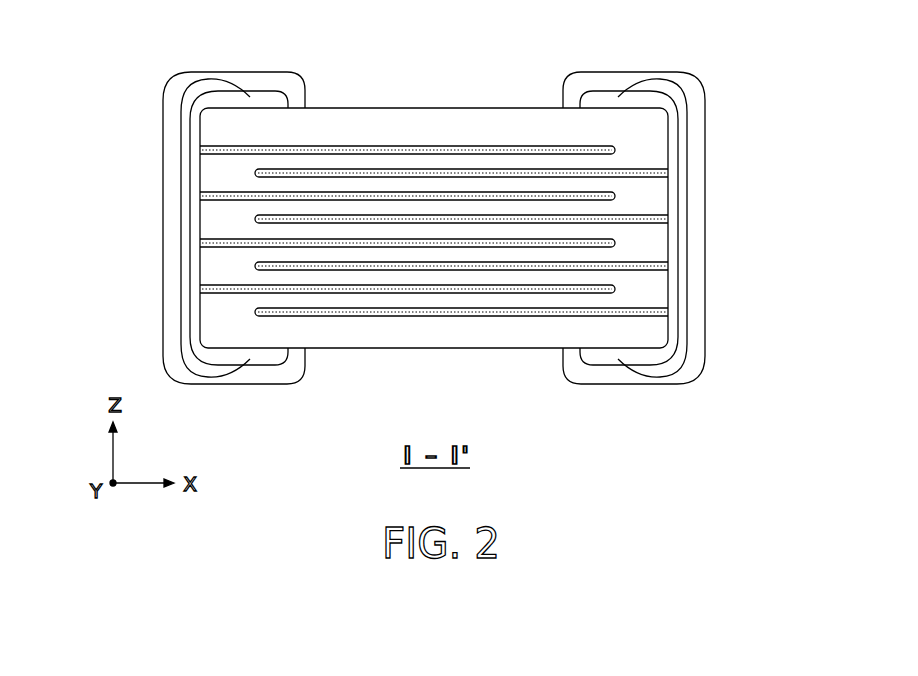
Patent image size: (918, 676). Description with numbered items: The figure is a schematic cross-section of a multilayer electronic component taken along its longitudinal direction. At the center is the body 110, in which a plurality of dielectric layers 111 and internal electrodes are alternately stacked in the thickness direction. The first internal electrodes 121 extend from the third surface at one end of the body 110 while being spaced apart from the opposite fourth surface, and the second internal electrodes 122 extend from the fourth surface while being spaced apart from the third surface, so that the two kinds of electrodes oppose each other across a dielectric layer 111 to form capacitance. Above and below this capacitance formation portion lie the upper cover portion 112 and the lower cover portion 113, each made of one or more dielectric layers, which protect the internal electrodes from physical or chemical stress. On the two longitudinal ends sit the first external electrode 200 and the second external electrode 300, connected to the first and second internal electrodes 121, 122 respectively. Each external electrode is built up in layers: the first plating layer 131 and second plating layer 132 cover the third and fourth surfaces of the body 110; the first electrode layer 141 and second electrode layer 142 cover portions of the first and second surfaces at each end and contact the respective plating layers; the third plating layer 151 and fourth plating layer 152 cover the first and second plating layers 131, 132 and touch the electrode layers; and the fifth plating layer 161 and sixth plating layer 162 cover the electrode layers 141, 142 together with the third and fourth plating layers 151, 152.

The body 110 is at (380, 107).
The dielectric layer 111 is at (332, 183).
The upper cover portion 112 is at (437, 122).
The lower cover portion 113 is at (440, 340).
The first internal electrode 121 is at (493, 147).
The second internal electrode 122 is at (542, 169).
The first plating layer 131 is at (196, 230).
The second plating layer 132 is at (675, 228).
The first electrode layer 141 is at (170, 98).
The second electrode layer 142 is at (703, 105).
The third plating layer 151 is at (184, 192).
The fourth plating layer 152 is at (685, 190).
The fifth plating layer 161 is at (168, 141).
The sixth plating layer 162 is at (700, 140).
The first external electrode 200 is at (87, 365).
The second external electrode 300 is at (785, 348).